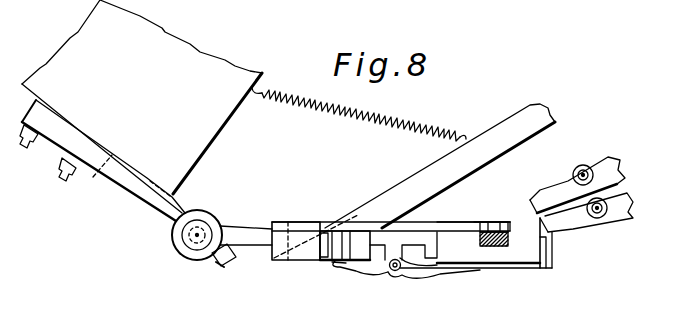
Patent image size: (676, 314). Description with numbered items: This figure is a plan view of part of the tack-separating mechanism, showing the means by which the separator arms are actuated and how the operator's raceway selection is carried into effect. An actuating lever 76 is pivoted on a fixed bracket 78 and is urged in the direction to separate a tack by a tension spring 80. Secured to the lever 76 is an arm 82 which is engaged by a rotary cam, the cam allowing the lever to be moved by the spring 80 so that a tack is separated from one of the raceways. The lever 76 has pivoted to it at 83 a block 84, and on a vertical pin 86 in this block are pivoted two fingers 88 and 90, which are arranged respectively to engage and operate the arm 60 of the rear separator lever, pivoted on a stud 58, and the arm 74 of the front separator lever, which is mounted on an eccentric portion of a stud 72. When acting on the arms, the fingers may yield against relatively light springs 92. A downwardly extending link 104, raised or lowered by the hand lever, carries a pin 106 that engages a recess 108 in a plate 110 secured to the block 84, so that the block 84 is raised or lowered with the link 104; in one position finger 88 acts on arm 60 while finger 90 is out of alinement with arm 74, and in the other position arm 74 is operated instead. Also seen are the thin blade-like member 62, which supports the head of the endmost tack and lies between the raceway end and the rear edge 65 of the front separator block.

The stud 58 is at (602, 213).
The arm 60 is at (572, 220).
The blade-like member 62 is at (580, 309).
The rear edge 65 is at (153, 309).
The stud 72 is at (588, 170).
The arm 74 is at (568, 182).
The actuating lever 76 is at (257, 243).
The fixed bracket 78 is at (153, 216).
The tension spring 80 is at (330, 112).
The arm 82 is at (465, 167).
The pivot 83 is at (297, 222).
The block 84 is at (365, 243).
The vertical pin 86 is at (396, 272).
The finger 88 is at (550, 259).
The finger 90 is at (430, 276).
The light springs 92 is at (340, 267).
The link 104 is at (495, 245).
The pin 106 is at (486, 229).
The recess 108 is at (477, 222).
The plate 110 is at (450, 212).